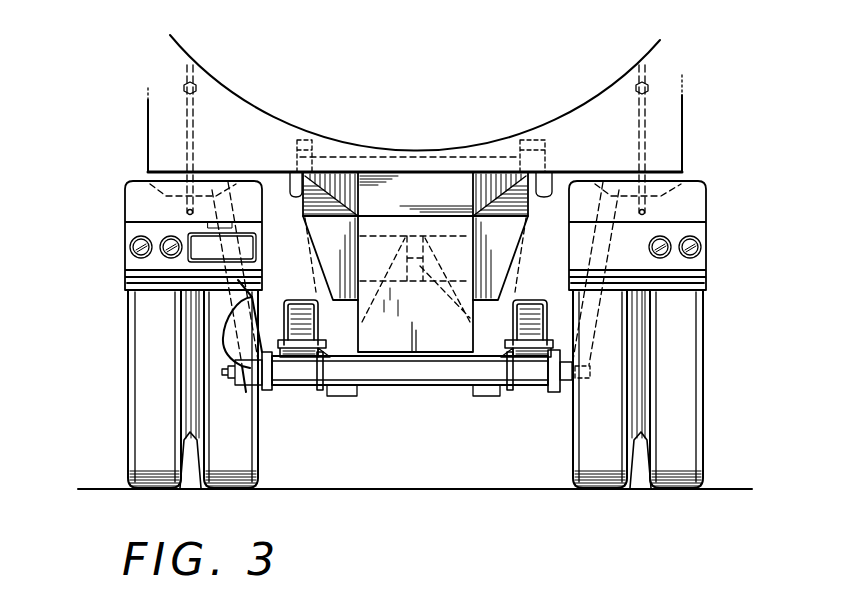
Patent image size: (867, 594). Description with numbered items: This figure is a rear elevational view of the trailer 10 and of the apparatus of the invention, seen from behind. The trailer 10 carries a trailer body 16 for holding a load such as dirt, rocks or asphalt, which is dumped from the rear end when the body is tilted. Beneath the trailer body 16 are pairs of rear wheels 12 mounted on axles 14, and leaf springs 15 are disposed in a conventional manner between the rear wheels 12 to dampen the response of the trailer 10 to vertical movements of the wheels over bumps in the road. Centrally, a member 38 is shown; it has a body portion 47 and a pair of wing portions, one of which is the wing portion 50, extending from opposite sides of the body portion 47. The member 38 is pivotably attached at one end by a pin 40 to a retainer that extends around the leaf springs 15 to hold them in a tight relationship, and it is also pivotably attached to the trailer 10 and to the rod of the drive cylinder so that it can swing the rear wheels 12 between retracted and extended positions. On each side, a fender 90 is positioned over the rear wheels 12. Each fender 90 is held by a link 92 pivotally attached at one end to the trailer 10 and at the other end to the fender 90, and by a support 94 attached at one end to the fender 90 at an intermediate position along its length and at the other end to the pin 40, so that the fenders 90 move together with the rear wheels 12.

The trailer 10 is at (710, 68).
The rear wheels 12 is at (212, 428).
The axles 14 is at (392, 370).
The leaf springs 15 is at (303, 320).
The trailer body 16 is at (605, 93).
The member 38 is at (438, 197).
The pin 40 is at (253, 387).
The body portion 47 is at (412, 337).
The wing portion 50 is at (315, 247).
The fenders 90 is at (140, 200).
The link 92 is at (187, 115).
The support 94 is at (230, 307).